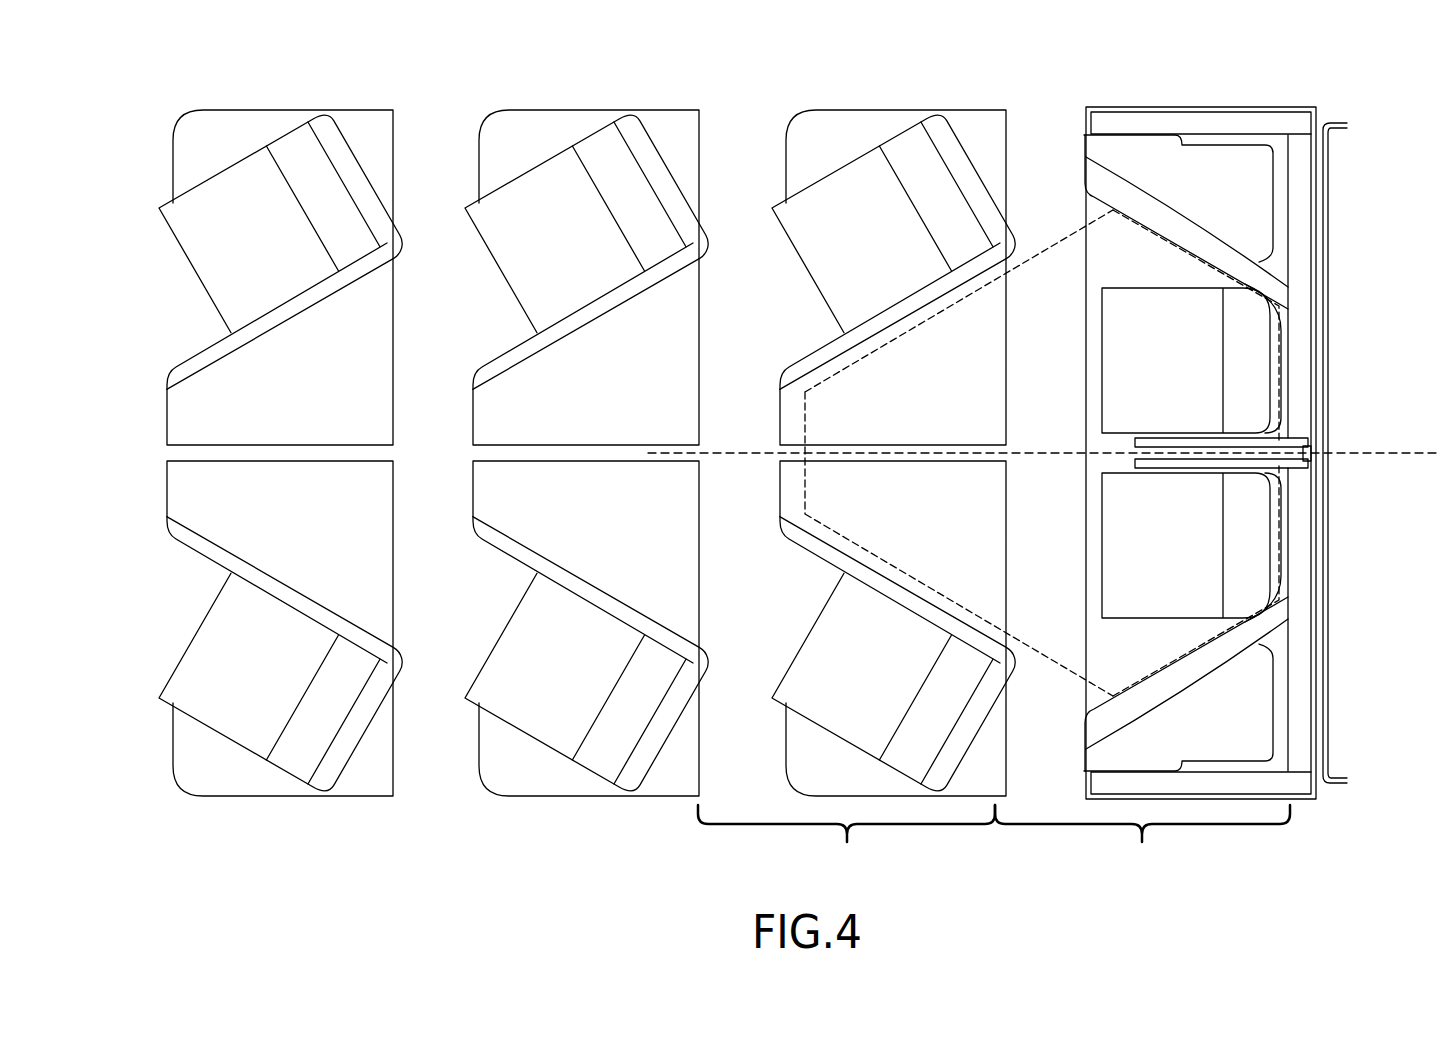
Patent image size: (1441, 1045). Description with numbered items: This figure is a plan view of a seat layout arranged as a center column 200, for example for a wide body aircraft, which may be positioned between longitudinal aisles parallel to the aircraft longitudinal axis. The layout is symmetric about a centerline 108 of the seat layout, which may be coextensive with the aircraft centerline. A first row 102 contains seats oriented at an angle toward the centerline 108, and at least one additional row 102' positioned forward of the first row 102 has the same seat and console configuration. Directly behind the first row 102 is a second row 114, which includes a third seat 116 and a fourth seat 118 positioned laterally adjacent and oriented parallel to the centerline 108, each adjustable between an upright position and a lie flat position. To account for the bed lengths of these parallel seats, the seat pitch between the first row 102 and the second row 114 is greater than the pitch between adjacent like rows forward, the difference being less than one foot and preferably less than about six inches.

The center column 200 is at (162, 72).
The additional row 102' is at (553, 419).
The first row 102 is at (906, 419).
The second row 114 is at (1215, 107).
The fourth seat 118 is at (1179, 370).
The third seat 116 is at (1179, 560).
The centerline 108 is at (1365, 453).